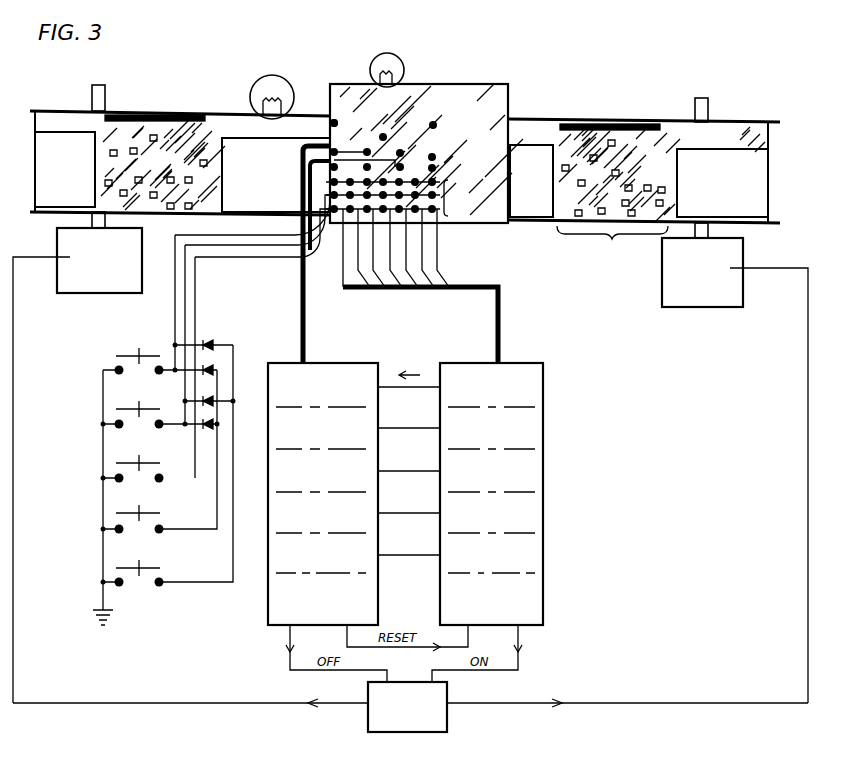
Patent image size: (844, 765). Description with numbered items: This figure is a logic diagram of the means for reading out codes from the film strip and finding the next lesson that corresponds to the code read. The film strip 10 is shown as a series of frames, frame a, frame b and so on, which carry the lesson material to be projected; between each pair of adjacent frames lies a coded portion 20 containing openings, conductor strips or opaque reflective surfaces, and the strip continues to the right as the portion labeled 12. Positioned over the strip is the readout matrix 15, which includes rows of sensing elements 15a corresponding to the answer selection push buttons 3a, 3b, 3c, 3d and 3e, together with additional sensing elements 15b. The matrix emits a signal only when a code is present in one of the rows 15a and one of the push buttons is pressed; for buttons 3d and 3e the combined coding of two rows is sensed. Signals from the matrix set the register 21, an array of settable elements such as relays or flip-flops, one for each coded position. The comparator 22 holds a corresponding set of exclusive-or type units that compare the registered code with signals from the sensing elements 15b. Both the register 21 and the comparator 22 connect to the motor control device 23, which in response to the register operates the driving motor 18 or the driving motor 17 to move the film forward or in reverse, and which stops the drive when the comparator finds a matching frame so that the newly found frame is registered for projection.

The film strip 10 is at (221, 113).
The film strip (right portion) 12 is at (737, 120).
The readout matrix 15 is at (466, 84).
The rows of sensing elements 15a is at (452, 200).
The additional sensing elements 15b is at (348, 152).
The driving motor 17 is at (57, 240).
The driving motor 18 is at (745, 253).
The coded portion 20 is at (612, 240).
The register 21 is at (553, 556).
The comparator 22 is at (266, 592).
The motor control device 23 is at (452, 697).
The answer selection push button 3a is at (133, 355).
The answer selection push button 3b is at (133, 406).
The answer selection push button 3c is at (131, 460).
The answer selection push button 3d is at (131, 510).
The answer selection push button 3e is at (131, 565).